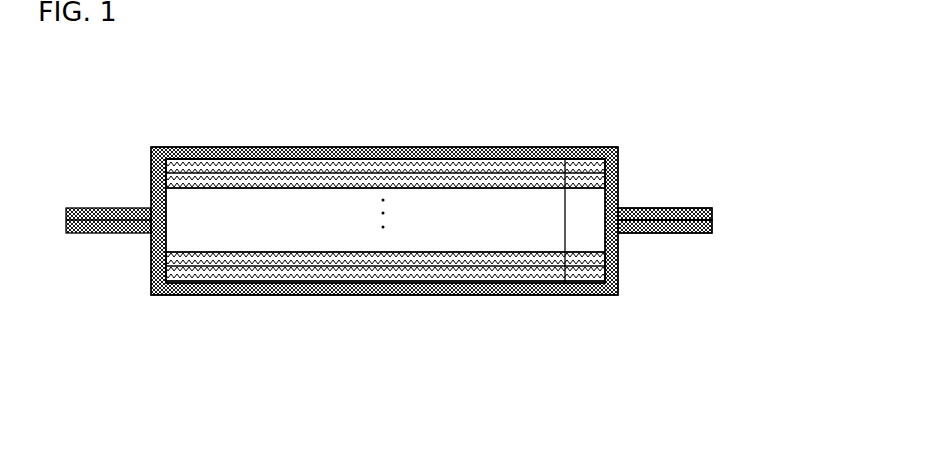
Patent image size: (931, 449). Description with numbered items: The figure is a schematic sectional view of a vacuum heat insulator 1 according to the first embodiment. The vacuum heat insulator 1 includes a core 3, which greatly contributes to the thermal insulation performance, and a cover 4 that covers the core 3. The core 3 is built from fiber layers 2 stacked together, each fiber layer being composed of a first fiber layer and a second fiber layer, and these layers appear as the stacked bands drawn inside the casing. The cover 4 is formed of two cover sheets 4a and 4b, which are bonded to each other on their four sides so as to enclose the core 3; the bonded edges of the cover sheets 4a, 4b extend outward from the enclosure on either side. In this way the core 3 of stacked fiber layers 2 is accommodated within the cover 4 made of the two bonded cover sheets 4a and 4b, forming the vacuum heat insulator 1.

The vacuum heat insulator 1 is at (219, 87).
The fiber layers 2 is at (548, 280).
The core 3 is at (565, 210).
The cover 4 is at (449, 197).
The cover sheet 4a is at (683, 208).
The cover sheet 4b is at (698, 230).